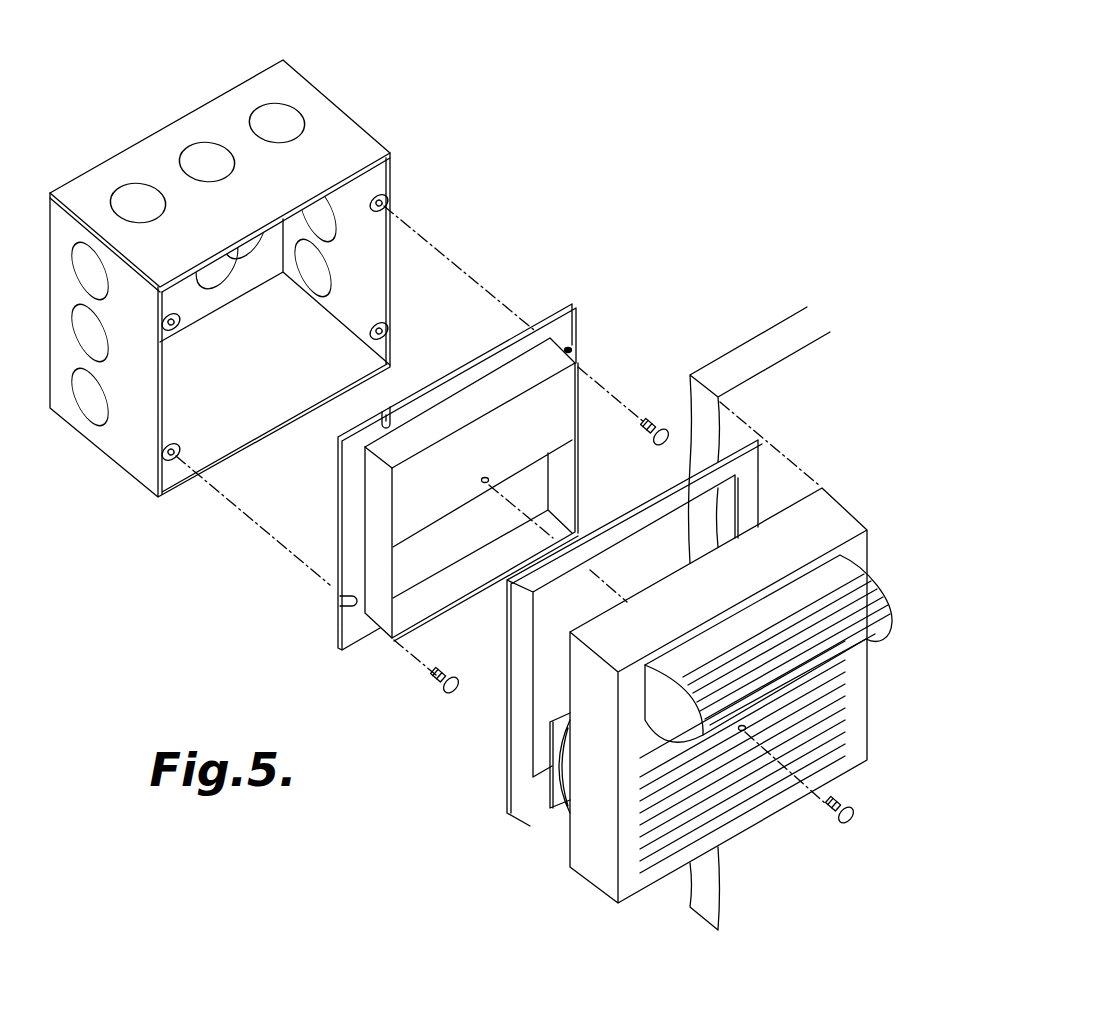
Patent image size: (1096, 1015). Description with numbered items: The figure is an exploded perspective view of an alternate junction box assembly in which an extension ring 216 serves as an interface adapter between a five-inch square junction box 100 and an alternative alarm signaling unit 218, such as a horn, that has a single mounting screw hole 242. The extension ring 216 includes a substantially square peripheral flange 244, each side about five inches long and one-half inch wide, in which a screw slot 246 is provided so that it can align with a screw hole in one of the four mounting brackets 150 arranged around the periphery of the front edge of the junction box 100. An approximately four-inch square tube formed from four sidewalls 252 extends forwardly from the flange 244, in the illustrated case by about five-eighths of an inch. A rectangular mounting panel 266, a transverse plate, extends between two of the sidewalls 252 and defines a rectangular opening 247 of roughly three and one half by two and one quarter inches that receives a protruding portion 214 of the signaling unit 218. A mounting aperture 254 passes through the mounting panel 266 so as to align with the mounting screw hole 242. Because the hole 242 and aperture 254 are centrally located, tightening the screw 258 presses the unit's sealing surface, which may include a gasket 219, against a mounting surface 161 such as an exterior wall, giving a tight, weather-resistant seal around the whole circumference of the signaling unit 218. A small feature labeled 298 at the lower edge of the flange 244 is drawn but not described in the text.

The junction box 100 is at (370, 80).
The mounting brackets 150 is at (393, 200).
The mounting surface 161 is at (752, 380).
The protruding portion 214 is at (552, 806).
The extension ring 216 is at (451, 442).
The signaling unit 218 is at (687, 720).
The gasket 219 is at (756, 452).
The mounting screw hole 242 is at (744, 735).
The peripheral flange 244 is at (572, 318).
The screw slot 246 is at (388, 409).
The rectangular opening 247 is at (443, 545).
The sidewalls 252 is at (378, 542).
The mounting aperture 254 is at (488, 483).
The screw 258 is at (852, 825).
The mounting panel 266 is at (443, 489).
The slot 298 is at (346, 606).